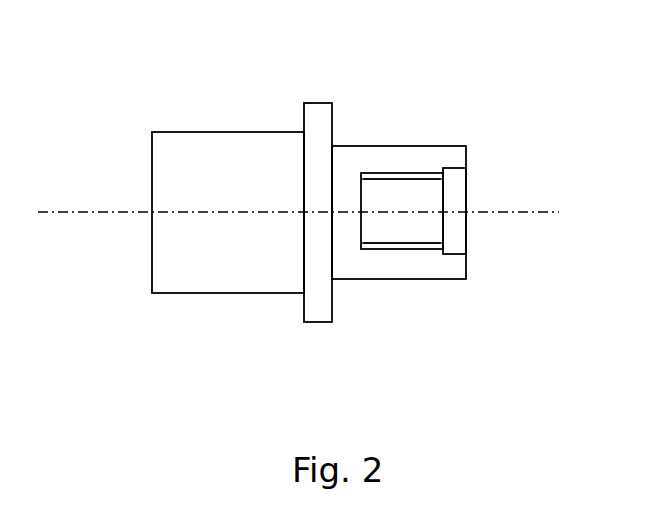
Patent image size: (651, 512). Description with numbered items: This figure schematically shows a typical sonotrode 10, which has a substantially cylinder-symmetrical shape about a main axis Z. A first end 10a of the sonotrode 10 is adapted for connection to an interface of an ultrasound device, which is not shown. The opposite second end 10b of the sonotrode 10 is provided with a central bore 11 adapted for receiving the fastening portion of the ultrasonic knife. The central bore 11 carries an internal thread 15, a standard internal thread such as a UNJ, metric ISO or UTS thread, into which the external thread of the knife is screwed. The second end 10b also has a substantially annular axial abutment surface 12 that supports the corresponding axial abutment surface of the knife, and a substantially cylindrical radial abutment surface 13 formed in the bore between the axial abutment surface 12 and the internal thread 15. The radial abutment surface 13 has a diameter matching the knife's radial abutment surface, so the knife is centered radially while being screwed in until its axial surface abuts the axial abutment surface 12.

The sonotrode 10 is at (327, 174).
The first end 10a is at (151, 163).
The second end 10b is at (457, 153).
The central bore 11 is at (417, 223).
The axial abutment surface 12 is at (466, 159).
The radial abutment surface 13 is at (452, 253).
The internal thread 15 is at (385, 179).
The main axis Z is at (90, 211).